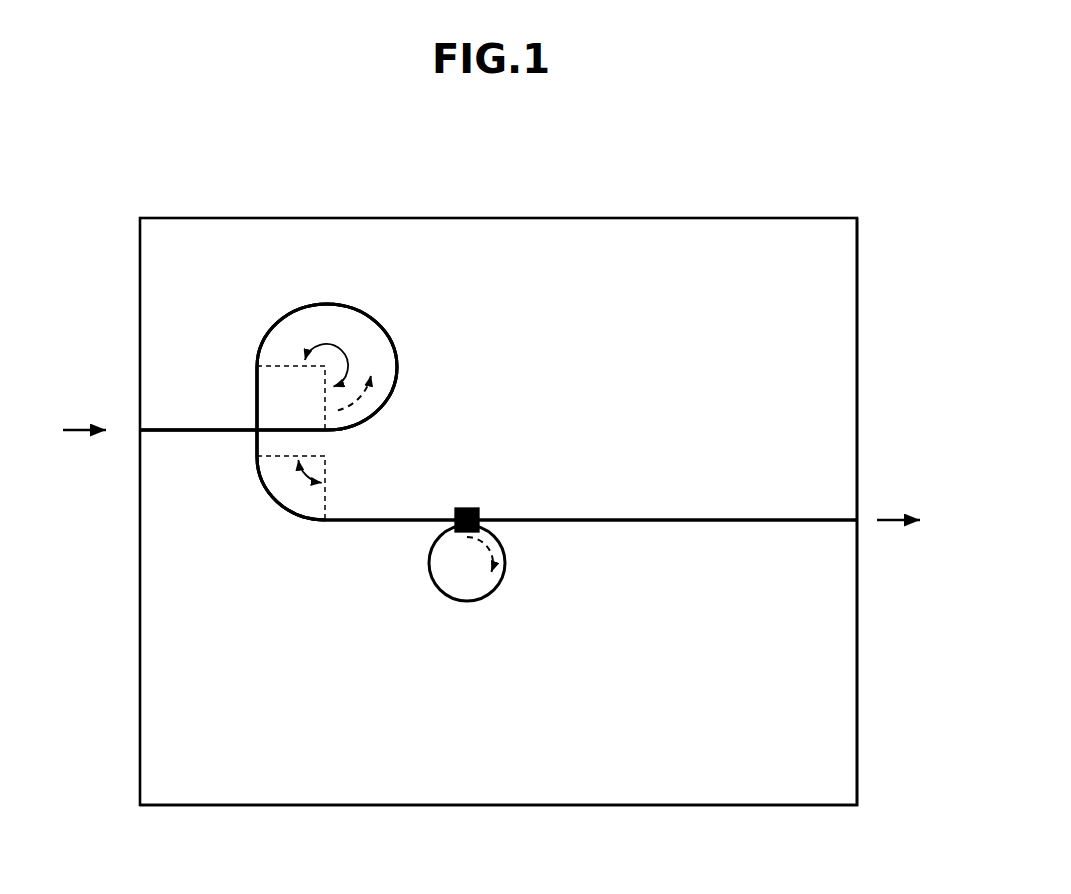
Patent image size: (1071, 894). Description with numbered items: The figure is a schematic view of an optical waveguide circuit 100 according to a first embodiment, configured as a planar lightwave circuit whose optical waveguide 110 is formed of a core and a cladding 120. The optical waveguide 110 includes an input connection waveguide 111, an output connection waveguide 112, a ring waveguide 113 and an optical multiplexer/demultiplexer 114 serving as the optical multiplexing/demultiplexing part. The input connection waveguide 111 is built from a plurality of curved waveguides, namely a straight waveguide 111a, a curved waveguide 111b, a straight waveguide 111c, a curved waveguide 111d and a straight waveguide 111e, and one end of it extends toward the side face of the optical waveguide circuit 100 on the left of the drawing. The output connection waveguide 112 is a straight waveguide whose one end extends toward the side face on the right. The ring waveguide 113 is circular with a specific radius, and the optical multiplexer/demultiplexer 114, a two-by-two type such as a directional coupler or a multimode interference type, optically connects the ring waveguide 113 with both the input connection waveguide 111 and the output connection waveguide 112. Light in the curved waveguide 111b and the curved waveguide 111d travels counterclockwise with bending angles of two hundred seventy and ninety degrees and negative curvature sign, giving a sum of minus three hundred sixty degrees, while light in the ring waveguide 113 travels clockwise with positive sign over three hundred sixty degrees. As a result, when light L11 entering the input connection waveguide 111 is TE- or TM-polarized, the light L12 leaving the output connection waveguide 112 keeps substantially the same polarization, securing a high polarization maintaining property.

The optical waveguide circuit 100 is at (770, 194).
The optical waveguide 110 is at (349, 612).
The input connection waveguide 111 is at (372, 292).
The straight waveguide 111a is at (190, 430).
The curved waveguide 111b is at (392, 337).
The straight waveguide 111c is at (255, 442).
The curved waveguide 111d is at (283, 517).
The straight waveguide 111e is at (383, 520).
The output connection waveguide 112 is at (688, 507).
The ring waveguide 113 is at (496, 603).
The optical multiplexer/demultiplexer 114 is at (468, 499).
The cladding 120 is at (807, 790).
The light L11 is at (83, 430).
The light L12 is at (895, 520).